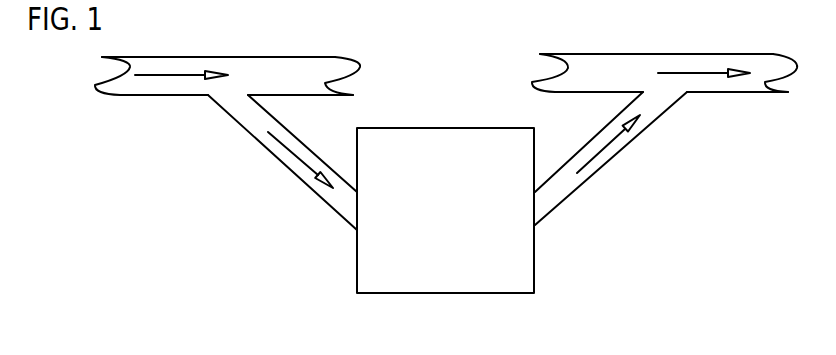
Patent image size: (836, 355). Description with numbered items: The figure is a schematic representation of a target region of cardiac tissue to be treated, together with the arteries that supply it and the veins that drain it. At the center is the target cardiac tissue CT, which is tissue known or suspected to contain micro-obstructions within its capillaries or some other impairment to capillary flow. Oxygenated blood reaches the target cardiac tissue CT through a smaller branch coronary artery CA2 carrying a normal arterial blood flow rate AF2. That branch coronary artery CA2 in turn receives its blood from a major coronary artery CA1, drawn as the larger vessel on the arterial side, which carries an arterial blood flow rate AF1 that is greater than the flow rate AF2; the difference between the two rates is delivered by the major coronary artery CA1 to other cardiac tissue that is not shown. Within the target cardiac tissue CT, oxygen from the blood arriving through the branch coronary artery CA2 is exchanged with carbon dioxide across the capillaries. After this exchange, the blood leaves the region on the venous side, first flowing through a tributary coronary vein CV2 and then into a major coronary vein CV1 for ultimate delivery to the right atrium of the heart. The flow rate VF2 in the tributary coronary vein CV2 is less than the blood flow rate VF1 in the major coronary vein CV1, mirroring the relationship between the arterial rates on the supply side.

The major coronary artery CA1 is at (218, 55).
The branch coronary artery CA2 is at (298, 177).
The arterial blood flow rate AF1 is at (175, 77).
The arterial blood flow rate AF2 is at (288, 150).
The target cardiac tissue CT is at (477, 293).
The major coronary vein CV1 is at (657, 54).
The tributary coronary vein CV2 is at (577, 190).
The venous blood flow rate VF1 is at (693, 75).
The venous blood flow rate VF2 is at (602, 152).